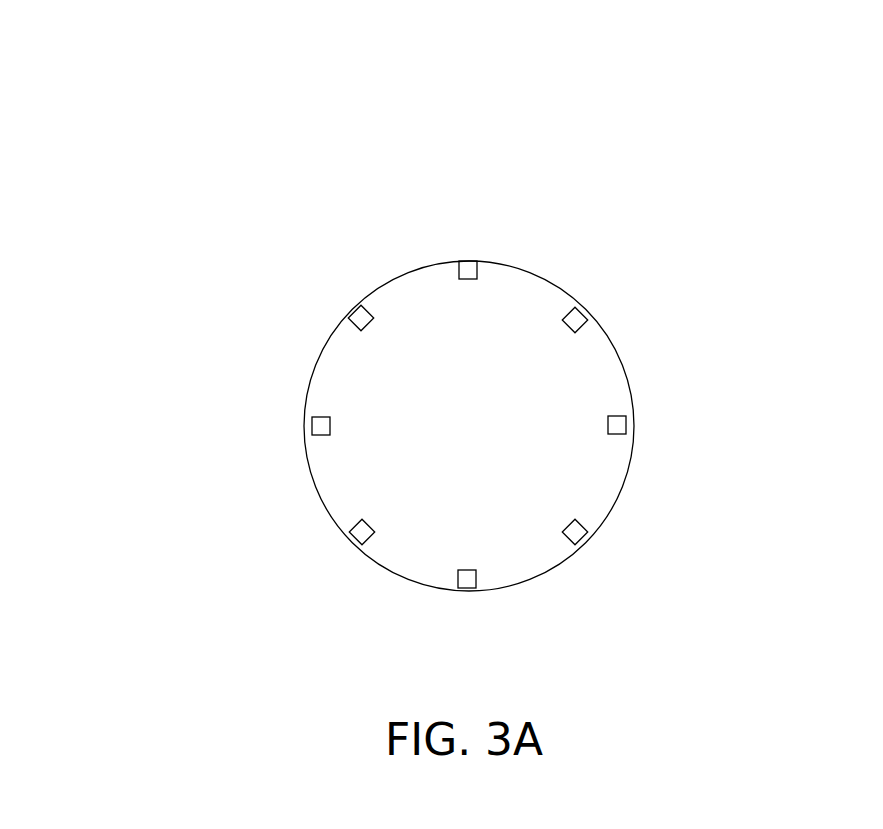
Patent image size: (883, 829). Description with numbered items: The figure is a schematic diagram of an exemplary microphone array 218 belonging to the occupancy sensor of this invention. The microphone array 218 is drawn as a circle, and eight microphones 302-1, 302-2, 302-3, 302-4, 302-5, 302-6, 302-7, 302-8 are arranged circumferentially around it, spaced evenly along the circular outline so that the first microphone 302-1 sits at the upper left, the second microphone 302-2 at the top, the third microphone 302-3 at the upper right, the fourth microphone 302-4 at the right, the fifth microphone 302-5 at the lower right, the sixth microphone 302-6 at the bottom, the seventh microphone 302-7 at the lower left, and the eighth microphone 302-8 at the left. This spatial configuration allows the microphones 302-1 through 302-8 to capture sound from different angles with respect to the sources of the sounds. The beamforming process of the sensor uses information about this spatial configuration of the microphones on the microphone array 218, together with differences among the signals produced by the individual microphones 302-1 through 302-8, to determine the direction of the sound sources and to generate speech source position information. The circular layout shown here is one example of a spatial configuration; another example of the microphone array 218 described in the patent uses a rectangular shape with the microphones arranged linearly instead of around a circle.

The microphone array 218 is at (298, 374).
The microphone 302-1 is at (355, 312).
The microphone 302-2 is at (468, 261).
The microphone 302-3 is at (582, 313).
The microphone 302-4 is at (627, 425).
The microphone 302-5 is at (582, 539).
The microphone 302-6 is at (467, 588).
The microphone 302-7 is at (356, 539).
The microphone 302-8 is at (312, 429).